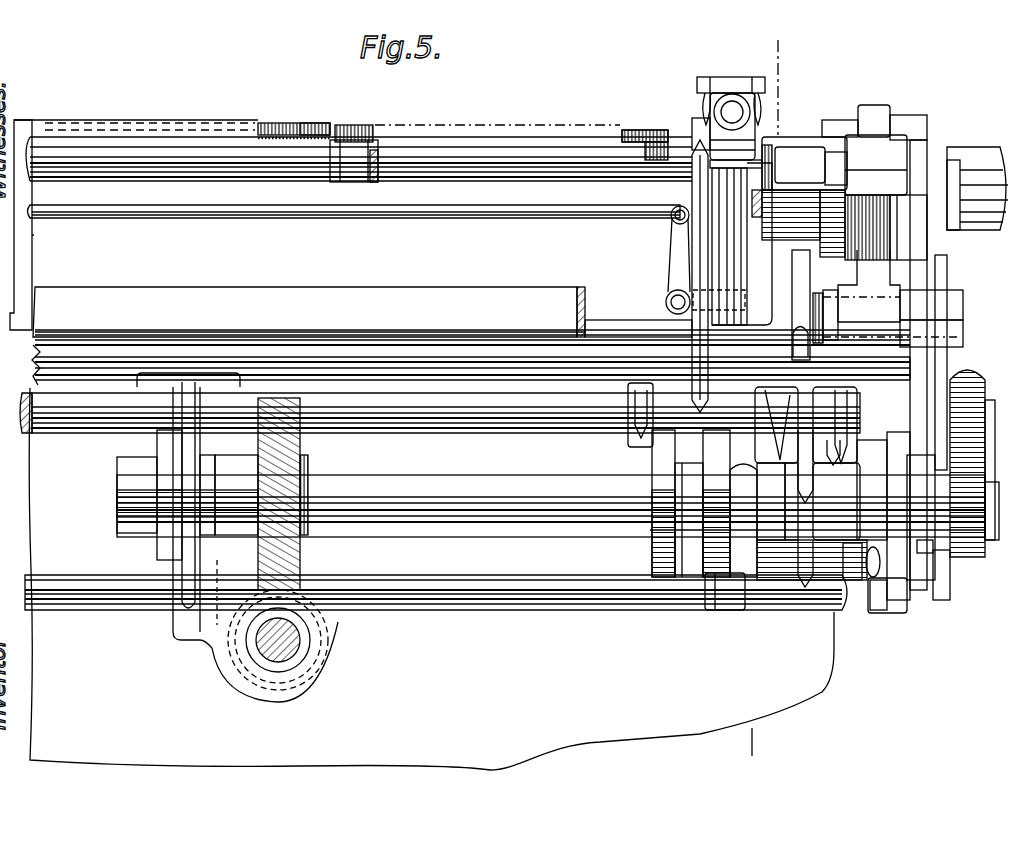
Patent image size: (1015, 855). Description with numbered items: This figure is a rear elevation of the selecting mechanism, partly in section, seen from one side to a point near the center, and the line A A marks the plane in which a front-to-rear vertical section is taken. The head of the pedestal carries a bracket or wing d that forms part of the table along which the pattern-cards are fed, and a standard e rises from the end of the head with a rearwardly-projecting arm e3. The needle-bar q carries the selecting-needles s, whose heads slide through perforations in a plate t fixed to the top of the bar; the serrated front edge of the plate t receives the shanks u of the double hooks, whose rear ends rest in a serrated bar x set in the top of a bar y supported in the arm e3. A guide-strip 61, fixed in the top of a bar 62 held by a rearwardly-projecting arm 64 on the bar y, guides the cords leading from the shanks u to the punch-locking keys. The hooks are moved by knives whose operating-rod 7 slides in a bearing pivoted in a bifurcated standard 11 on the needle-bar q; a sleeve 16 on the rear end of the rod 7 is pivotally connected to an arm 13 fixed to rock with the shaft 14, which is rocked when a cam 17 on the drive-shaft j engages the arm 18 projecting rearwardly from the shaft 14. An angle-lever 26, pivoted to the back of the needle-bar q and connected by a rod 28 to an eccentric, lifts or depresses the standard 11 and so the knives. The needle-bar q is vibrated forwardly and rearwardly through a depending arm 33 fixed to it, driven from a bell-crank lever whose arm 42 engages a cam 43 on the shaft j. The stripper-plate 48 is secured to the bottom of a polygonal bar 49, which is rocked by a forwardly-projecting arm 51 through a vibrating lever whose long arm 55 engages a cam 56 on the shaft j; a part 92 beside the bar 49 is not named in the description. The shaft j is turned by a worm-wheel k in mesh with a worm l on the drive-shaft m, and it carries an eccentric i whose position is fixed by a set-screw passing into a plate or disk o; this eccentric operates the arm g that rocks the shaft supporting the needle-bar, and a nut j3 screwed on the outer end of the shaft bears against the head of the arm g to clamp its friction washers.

The guide-strip 61 is at (263, 128).
The serrated bar x is at (325, 124).
The hook shanks u is at (360, 126).
The bar 62 is at (240, 162).
The bar y is at (378, 172).
The plate t is at (628, 130).
The selecting-needles s is at (663, 152).
The rod 28 is at (401, 212).
The needle-bar q is at (144, 248).
The polygonal bar 49 is at (975, 315).
The stripper-plate 48 is at (485, 332).
The bar 92 is at (614, 330).
The bracket or wing d is at (543, 360).
The rock-shaft 14 is at (420, 428).
The drive-shaft j is at (402, 512).
The worm l is at (332, 600).
The worm-wheel k is at (300, 562).
The drive-shaft m is at (298, 648).
The bifurcated standard 11 is at (700, 116).
The sleeve 16 is at (728, 93).
The operating-rod 7 is at (735, 100).
The section line A A is at (768, 400).
The rearwardly-projecting arm 64 is at (811, 166).
The standard e is at (877, 107).
The rearwardly-projecting arm e3 is at (876, 165).
The nut j3 is at (977, 188).
The arm 13 is at (698, 232).
The angle-lever 26 is at (676, 266).
The arm g is at (942, 276).
The forwardly-projecting arm 51 is at (963, 306).
The depending arm 33 is at (793, 346).
The arm 18 is at (628, 432).
The cam 17 is at (658, 527).
The cam 43 is at (708, 470).
The bell-crank lever arm 42 is at (739, 594).
The long arm of vibrating lever 55 is at (882, 600).
The cam 56 is at (897, 440).
The eccentric i is at (972, 463).
The plate or disk o is at (950, 578).